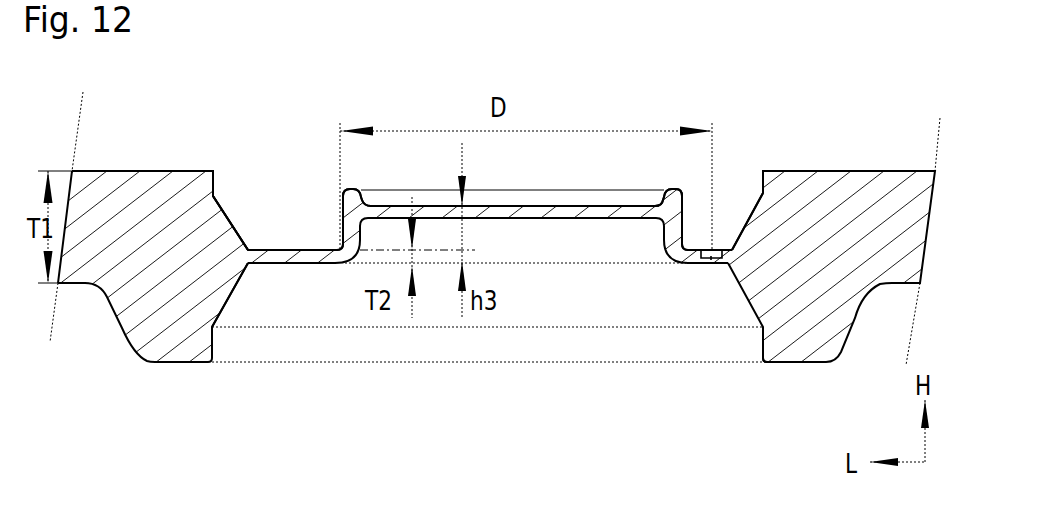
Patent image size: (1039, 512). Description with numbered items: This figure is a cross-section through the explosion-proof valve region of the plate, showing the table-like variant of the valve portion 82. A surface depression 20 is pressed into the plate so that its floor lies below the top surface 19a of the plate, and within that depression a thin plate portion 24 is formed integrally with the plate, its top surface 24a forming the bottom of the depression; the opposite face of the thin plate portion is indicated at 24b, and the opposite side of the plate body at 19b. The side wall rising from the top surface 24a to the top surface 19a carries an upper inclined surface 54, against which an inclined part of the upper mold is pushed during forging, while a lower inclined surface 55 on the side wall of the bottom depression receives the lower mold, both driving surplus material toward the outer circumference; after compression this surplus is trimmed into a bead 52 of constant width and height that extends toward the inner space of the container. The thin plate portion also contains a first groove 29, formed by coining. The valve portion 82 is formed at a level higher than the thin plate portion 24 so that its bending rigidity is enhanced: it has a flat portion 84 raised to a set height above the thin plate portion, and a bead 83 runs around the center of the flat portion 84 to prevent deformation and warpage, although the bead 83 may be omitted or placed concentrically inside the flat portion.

The top surface of the plate 19a is at (808, 171).
The second frame portion 19b is at (73, 285).
The surface depression 20 is at (240, 185).
The thin plate portion 24 is at (287, 250).
The top surface of the thin plate portion 24a is at (302, 246).
The recess bottom ledge 24b is at (246, 250).
The first groove 29 is at (718, 250).
The bead 52 is at (797, 355).
The upper inclined surface 54 is at (743, 213).
The lower inclined surface 55 is at (247, 287).
The valve portion 82 is at (568, 205).
The bead 83 is at (348, 192).
The flat portion 84 is at (634, 204).